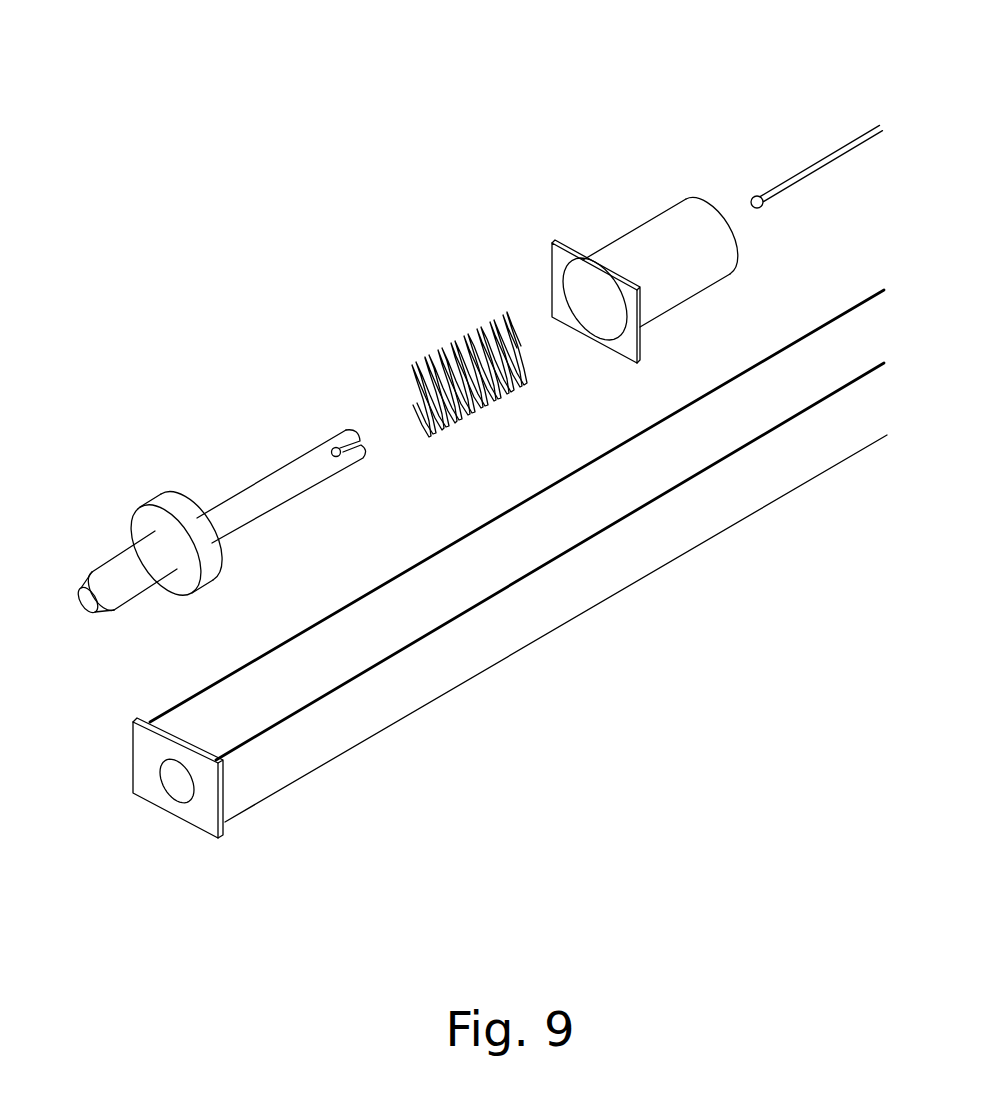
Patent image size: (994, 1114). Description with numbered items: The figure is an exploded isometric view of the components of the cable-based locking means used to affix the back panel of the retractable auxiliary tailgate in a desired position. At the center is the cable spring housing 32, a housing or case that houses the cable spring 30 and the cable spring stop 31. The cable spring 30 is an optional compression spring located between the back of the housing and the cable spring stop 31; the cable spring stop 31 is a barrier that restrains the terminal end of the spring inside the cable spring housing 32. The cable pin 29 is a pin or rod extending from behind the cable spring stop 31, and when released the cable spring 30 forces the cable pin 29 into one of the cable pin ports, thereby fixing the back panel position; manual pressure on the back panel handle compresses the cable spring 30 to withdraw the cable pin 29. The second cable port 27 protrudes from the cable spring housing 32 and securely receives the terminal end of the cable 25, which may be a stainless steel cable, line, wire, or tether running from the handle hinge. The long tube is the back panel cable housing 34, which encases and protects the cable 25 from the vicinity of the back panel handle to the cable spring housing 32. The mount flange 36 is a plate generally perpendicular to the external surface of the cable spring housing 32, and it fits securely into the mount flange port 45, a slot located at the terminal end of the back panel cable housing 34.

The cable 25 is at (798, 157).
The second cable port 27 is at (335, 450).
The cable pin 29 is at (95, 552).
The cable spring 30 is at (437, 327).
The cable spring stop 31 is at (167, 515).
The cable spring housing 32 is at (652, 257).
The back panel cable housing 34 is at (695, 520).
The mount flange 36 is at (551, 245).
The mount flange port 45 is at (187, 742).